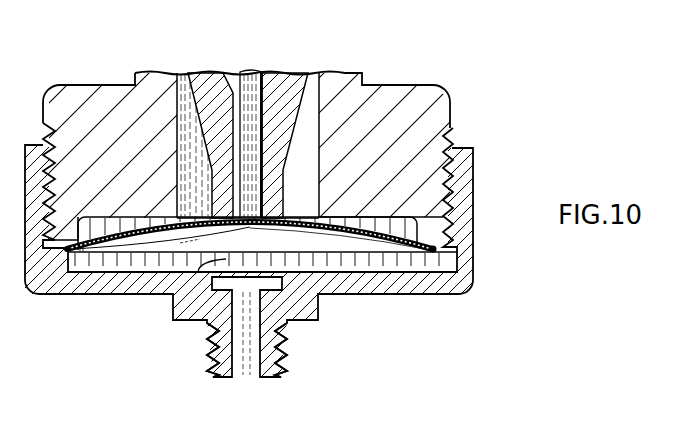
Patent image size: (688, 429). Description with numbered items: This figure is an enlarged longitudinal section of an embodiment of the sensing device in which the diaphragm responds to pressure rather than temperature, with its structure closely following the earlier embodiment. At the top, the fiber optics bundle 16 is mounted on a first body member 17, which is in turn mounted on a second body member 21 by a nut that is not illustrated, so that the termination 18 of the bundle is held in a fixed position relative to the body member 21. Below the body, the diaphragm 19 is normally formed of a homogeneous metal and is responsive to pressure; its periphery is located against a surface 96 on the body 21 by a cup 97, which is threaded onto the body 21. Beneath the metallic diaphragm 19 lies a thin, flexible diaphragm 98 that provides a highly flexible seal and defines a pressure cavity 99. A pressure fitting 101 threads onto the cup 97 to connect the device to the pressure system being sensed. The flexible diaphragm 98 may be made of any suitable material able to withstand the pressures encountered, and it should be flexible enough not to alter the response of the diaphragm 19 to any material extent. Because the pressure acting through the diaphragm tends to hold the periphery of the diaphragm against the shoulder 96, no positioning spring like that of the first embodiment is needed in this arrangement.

The fiber optics bundle 16 is at (248, 72).
The first body member 17 is at (293, 78).
The termination 18 is at (257, 228).
The diaphragm 19 is at (357, 232).
The second body member 21 is at (432, 95).
The surface 96 is at (420, 240).
The cup 97 is at (471, 173).
The thin flexible diaphragm 98 is at (310, 232).
The pressure cavity 99 is at (173, 297).
The pressure fitting 101 is at (293, 351).